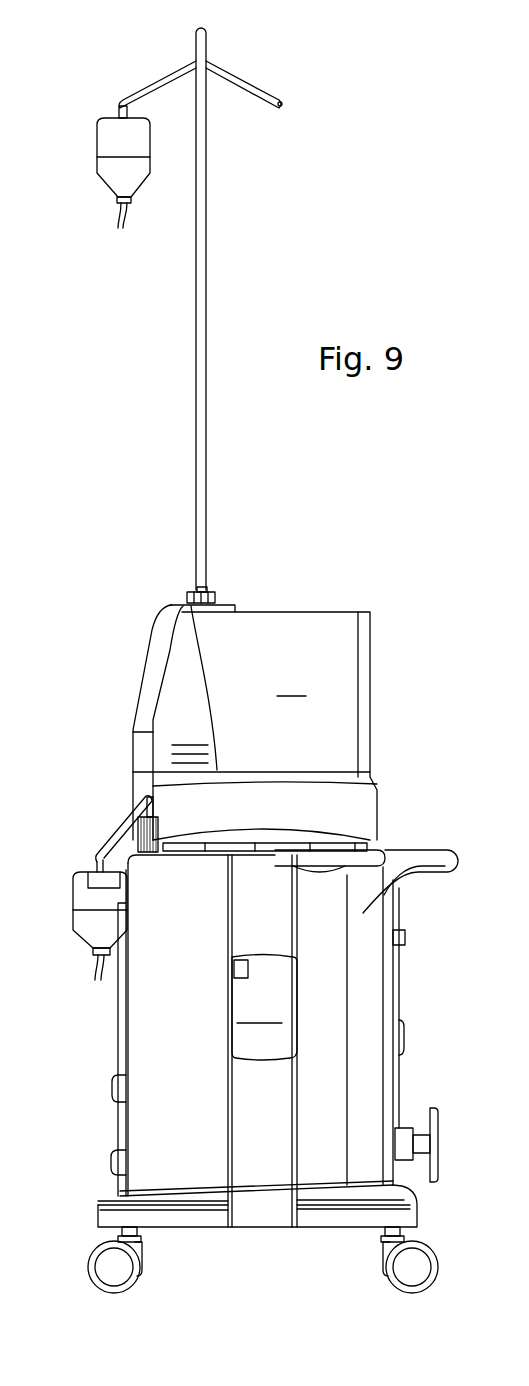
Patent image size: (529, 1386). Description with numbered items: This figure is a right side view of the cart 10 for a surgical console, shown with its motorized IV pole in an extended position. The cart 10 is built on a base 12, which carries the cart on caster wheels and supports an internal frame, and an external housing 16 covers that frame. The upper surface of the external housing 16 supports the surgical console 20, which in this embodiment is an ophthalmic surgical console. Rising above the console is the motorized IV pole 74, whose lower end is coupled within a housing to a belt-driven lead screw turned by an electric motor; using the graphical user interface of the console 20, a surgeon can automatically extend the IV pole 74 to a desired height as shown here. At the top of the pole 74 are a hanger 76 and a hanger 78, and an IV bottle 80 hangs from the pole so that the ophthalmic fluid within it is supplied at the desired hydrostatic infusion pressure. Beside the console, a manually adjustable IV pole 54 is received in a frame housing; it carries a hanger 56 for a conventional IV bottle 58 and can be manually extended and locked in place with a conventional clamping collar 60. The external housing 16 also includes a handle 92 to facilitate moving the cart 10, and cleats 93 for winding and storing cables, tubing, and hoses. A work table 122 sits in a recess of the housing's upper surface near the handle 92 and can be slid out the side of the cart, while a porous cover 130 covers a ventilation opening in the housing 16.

The cart 10 is at (327, 535).
The base 12 is at (193, 1220).
The external housing 16 is at (358, 1006).
The surgical console 20 is at (255, 728).
The manually adjustable IV pole 54 is at (147, 797).
The hanger 56 is at (116, 830).
The IV bottle 58 is at (85, 932).
The clamping collar 60 is at (172, 838).
The IV pole 74 is at (207, 271).
The hanger 76 is at (150, 83).
The hanger 78 is at (257, 87).
The IV bottle 80 is at (107, 187).
The handle 92 is at (438, 857).
The cleats 93 is at (440, 1145).
The work table 122 is at (375, 848).
The porous cover 130 is at (264, 1008).